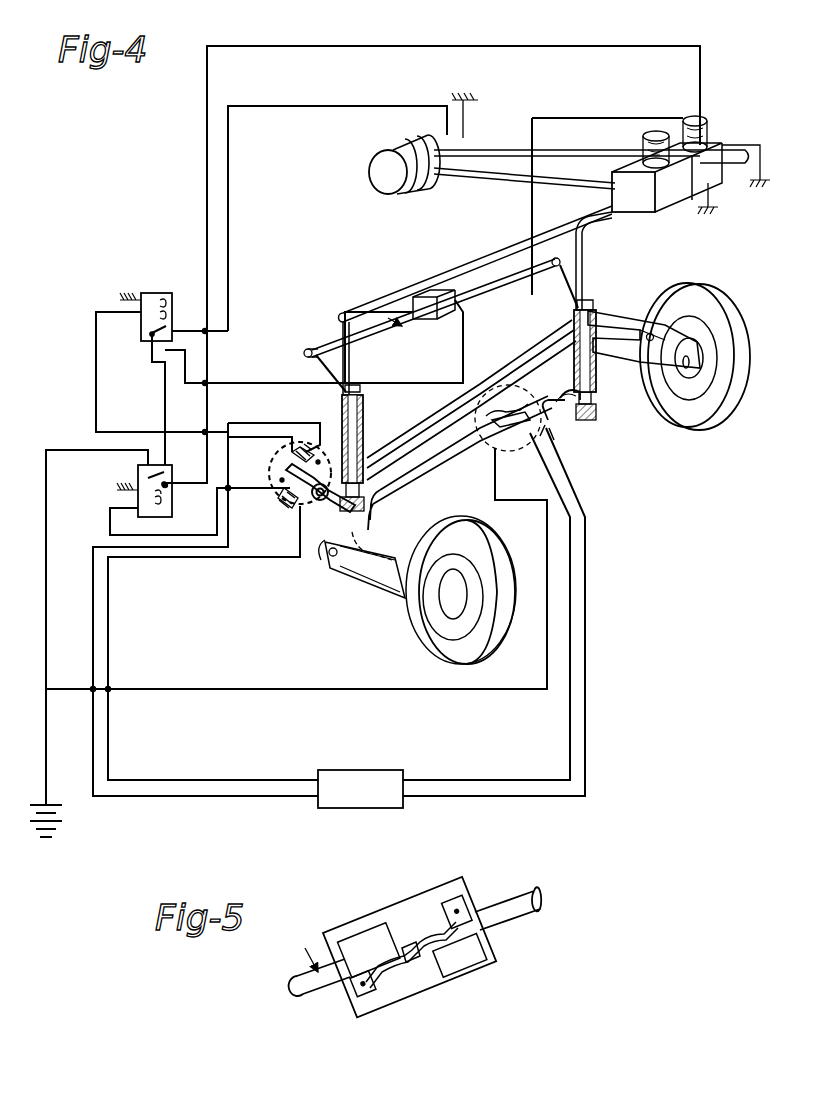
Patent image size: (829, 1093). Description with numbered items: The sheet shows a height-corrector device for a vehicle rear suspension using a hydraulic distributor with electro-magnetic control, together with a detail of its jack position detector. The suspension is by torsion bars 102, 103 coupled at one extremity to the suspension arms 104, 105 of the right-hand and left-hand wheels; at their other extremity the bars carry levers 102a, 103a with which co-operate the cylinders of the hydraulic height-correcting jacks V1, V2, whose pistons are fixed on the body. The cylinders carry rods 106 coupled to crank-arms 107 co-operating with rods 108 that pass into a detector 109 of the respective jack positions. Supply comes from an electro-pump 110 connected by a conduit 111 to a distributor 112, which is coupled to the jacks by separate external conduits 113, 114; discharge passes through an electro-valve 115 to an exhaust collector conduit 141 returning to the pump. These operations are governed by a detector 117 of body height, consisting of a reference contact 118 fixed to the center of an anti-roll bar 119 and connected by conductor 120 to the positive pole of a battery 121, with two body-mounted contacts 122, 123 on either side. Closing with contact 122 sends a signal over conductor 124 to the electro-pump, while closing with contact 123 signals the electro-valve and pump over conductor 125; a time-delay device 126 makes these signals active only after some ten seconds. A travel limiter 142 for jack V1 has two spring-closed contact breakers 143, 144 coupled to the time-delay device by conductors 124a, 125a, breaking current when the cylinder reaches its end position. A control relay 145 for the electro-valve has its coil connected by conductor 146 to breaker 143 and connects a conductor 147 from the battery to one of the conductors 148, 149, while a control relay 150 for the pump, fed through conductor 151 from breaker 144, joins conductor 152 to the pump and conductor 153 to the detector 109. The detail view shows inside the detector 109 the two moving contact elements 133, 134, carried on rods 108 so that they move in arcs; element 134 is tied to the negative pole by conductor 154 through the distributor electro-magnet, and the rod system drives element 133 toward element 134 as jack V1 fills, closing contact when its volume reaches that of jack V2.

In FIG. 4, the torsion bar 102 is at (432, 425).
In FIG. 4, the lever 102a is at (330, 558).
In FIG. 4, the torsion bar 103 is at (442, 486).
In FIG. 4, the lever 103a is at (575, 420).
In FIG. 4, the suspension arm 104 is at (633, 325).
In FIG. 4, the suspension arm 105 is at (346, 572).
In FIG. 4, the rod 106 is at (350, 372).
In FIG. 4, the crank-arm 107 is at (312, 346).
In FIG. 4, the rod 108 is at (532, 292).
In FIG. 5, the rod 108 is at (302, 988).
In FIG. 4, the detector 109 is at (418, 294).
In FIG. 5, the detector 109 is at (344, 914).
In FIG. 4, the electro-pump 110 is at (430, 134).
In FIG. 4, the conduit 111 is at (500, 186).
In FIG. 4, the distributor 112 is at (664, 192).
In FIG. 4, the external conduit 113 is at (498, 258).
In FIG. 4, the external conduit 114 is at (624, 216).
In FIG. 4, the electro-valve 115 is at (705, 138).
In FIG. 4, the detector of the height of the body 117 is at (548, 432).
In FIG. 4, the reference contact 118 is at (462, 418).
In FIG. 4, the anti-roll bar 119 is at (420, 466).
In FIG. 4, the conductor 120 is at (296, 689).
In FIG. 4, the battery 121 is at (70, 812).
In FIG. 4, the contact 122 is at (508, 402).
In FIG. 4, the contact 123 is at (514, 448).
In FIG. 4, the conductor 124 is at (585, 622).
In FIG. 4, the conductor 124a is at (93, 710).
In FIG. 4, the conductor 125 is at (570, 698).
In FIG. 4, the conductor 125a is at (108, 752).
In FIG. 4, the time-delay device 126 is at (392, 770).
In FIG. 5, the moving contact element 133 is at (398, 942).
In FIG. 5, the moving contact element 134 is at (414, 964).
In FIG. 4, the exhaust collector conduit 141 is at (512, 148).
In FIG. 4, the travel limiter 142 is at (278, 456).
In FIG. 4, the contact breaker 143 is at (292, 508).
In FIG. 4, the contact breaker 144 is at (302, 440).
In FIG. 4, the control relay 145 is at (172, 506).
In FIG. 4, the conductor 146 is at (140, 518).
In FIG. 4, the conductor 147 is at (46, 510).
In FIG. 4, the conductor 148 is at (207, 292).
In FIG. 4, the conductor 149 is at (165, 407).
In FIG. 4, the control relay 150 is at (148, 292).
In FIG. 4, the conductor 151 is at (96, 365).
In FIG. 4, the conductor 152 is at (228, 172).
In FIG. 4, the conductor 153 is at (260, 383).
In FIG. 5, the conductor 153 is at (376, 1020).
In FIG. 4, the conductor 154 is at (492, 302).
In FIG. 5, the conductor 154 is at (452, 900).
In FIG. 4, the hydraulic height-correcting jack V1 is at (366, 440).
In FIG. 4, the hydraulic height-correcting jack V2 is at (598, 382).